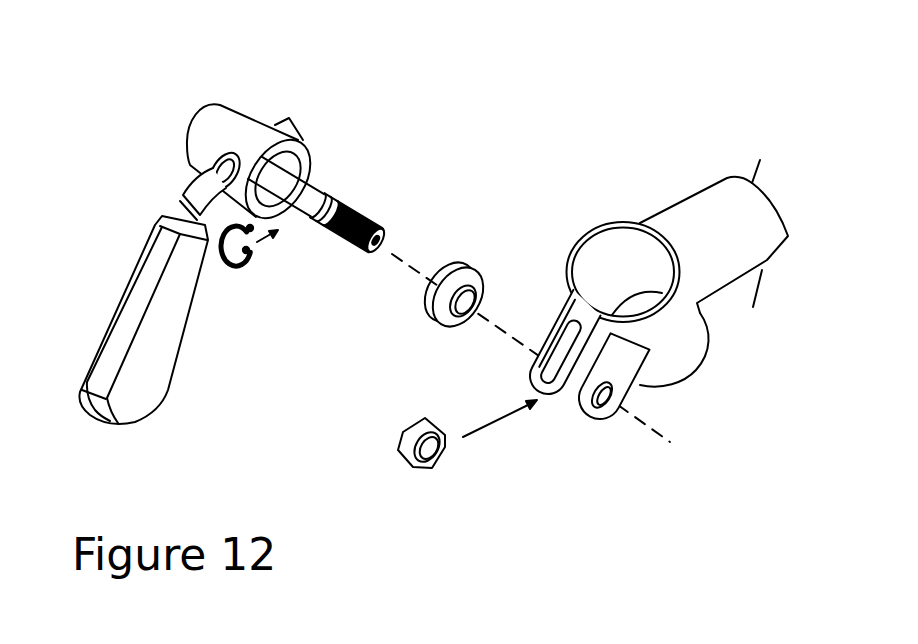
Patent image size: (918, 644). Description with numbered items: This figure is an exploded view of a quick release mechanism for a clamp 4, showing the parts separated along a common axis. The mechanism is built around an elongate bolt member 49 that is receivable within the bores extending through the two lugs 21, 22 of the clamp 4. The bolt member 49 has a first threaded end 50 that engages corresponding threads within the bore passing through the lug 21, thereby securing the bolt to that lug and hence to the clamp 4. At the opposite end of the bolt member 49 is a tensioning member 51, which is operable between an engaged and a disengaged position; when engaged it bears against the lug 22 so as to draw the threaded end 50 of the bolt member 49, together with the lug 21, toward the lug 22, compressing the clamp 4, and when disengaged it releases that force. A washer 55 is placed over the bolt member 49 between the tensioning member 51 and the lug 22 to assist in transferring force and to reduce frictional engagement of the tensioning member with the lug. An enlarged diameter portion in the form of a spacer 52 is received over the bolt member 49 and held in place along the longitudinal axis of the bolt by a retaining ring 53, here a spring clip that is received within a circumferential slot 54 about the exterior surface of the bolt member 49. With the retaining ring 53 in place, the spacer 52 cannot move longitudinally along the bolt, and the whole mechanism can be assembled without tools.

The clamp 4 is at (688, 197).
The lug 21 is at (585, 417).
The lug 22 is at (548, 390).
The bolt member 49 is at (323, 228).
The threaded end 50 is at (378, 223).
The tensioning member 51 is at (242, 108).
The spacer 52 is at (418, 467).
The retaining ring 53 is at (227, 265).
The circumferential slot 54 is at (327, 193).
The washer 55 is at (474, 255).